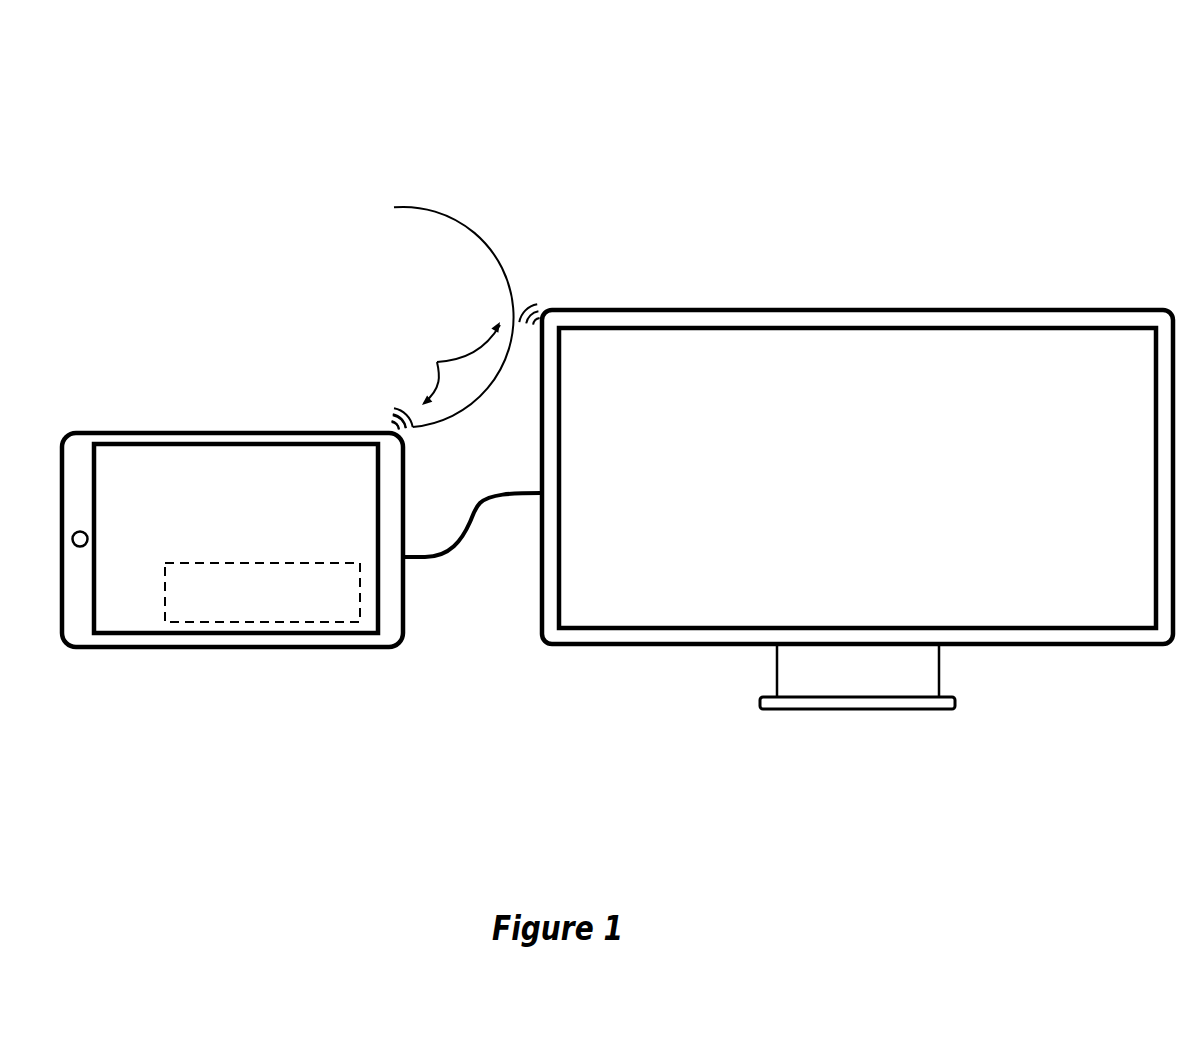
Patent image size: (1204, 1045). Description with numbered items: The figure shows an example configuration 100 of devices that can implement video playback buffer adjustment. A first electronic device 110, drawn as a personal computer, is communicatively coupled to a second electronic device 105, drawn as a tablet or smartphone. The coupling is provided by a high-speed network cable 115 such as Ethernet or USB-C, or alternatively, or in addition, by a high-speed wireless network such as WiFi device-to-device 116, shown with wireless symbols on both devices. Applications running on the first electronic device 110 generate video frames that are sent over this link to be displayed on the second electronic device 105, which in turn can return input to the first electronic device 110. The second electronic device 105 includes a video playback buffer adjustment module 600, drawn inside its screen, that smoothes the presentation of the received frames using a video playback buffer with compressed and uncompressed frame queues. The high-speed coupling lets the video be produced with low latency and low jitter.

The example configuration 100 is at (75, 51).
The second electronic device 105 is at (277, 546).
The first electronic device 110 is at (878, 506).
The high-speed network cable 115 is at (472, 483).
The WiFi device-to-device connection 116 is at (407, 318).
The video playback buffer adjustment module 600 is at (325, 613).